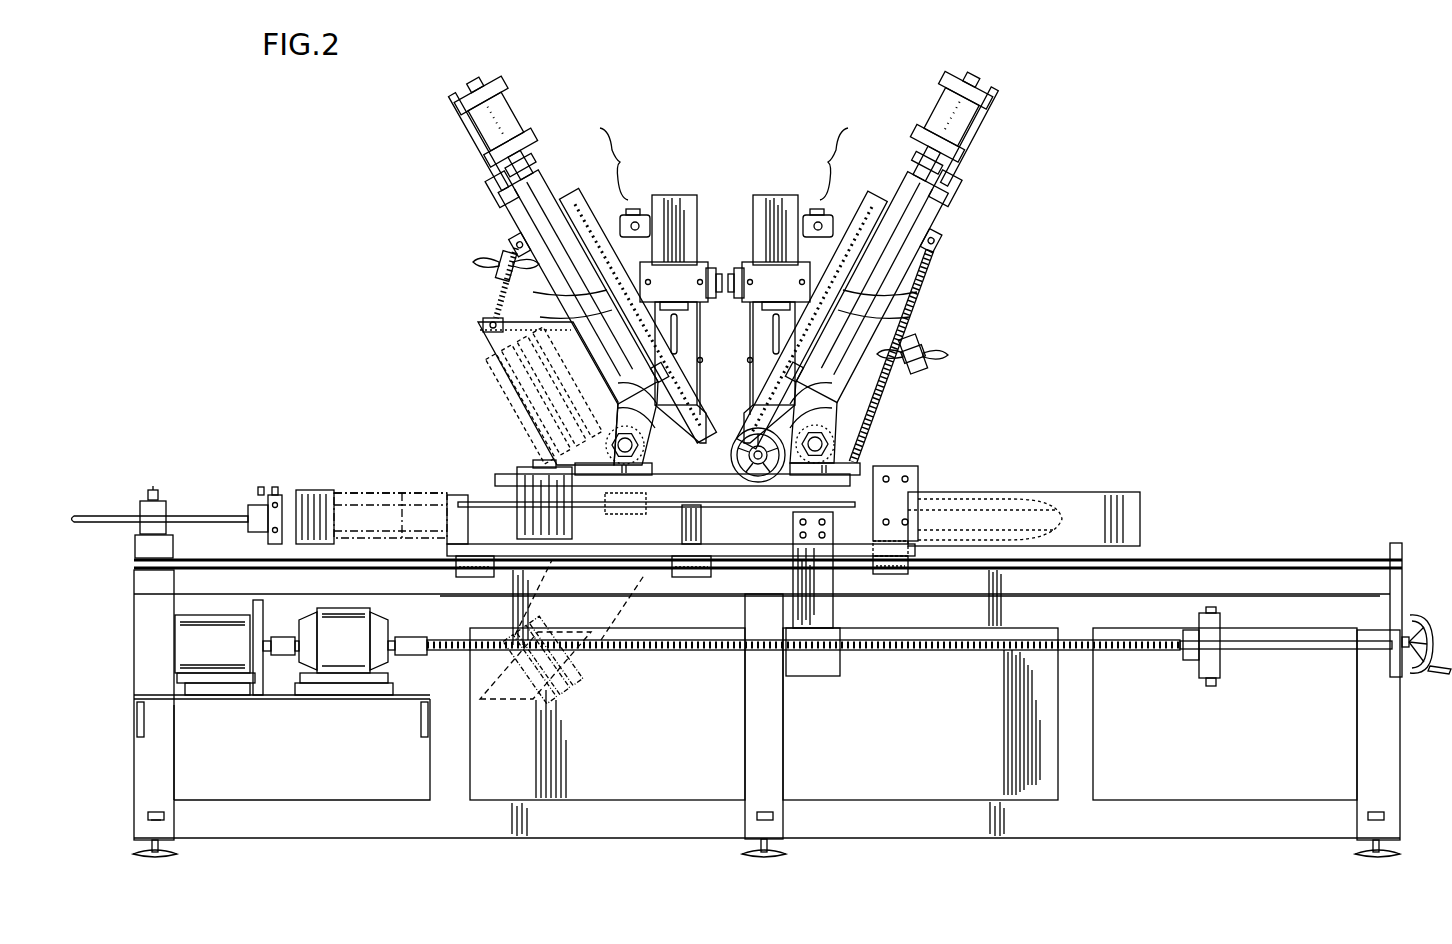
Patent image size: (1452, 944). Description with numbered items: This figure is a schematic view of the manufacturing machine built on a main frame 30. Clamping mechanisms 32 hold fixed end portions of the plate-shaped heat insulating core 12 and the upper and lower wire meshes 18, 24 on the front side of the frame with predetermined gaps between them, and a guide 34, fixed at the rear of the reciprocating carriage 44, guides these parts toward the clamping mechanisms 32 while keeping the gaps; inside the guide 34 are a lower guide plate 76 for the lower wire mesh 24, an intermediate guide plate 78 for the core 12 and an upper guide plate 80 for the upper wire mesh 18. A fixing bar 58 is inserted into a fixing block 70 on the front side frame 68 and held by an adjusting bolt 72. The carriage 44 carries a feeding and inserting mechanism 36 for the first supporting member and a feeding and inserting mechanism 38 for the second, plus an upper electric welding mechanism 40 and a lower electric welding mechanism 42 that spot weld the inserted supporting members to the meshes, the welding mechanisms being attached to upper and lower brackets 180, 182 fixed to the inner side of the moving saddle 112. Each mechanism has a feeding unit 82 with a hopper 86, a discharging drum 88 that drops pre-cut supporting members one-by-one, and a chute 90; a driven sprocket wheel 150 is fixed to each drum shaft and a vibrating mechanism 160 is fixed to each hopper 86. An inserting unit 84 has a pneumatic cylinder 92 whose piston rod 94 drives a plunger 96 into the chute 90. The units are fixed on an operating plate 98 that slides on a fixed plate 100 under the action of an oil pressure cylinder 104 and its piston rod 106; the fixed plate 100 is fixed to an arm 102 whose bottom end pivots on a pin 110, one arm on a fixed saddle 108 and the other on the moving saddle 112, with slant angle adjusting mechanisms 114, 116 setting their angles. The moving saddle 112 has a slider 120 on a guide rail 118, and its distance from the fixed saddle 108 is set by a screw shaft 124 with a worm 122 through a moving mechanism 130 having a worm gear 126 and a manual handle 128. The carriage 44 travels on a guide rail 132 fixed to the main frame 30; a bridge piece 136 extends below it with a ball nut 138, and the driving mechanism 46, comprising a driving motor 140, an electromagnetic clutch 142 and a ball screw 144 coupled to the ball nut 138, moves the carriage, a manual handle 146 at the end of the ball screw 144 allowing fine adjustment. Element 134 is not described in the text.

The plate-shaped heat insulating core 12 is at (372, 504).
The upper wire mesh 18 is at (340, 492).
The lower wire mesh 24 is at (403, 530).
The main frame 30 is at (672, 840).
The clamping mechanism 32 is at (282, 494).
The guide 34 is at (1112, 490).
The feeding and inserting mechanism of the first supporting member 36 is at (960, 272).
The feeding and inserting mechanism of the second supporting member 38 is at (402, 272).
The upper electric welding mechanism 40 is at (480, 352).
The lower electric welding mechanism 42 is at (519, 700).
The reciprocating carriage 44 is at (762, 570).
The driving mechanism 46 is at (288, 710).
The fixing bar 58 is at (207, 515).
The front side frame 68 is at (134, 545).
The fixing block 70 is at (142, 506).
The adjusting bolt 72 is at (153, 486).
The lower guide plate 76 is at (1040, 550).
The intermediate guide plate 78 is at (1060, 512).
The upper guide plate 80 is at (1000, 500).
The feeding unit 82 is at (672, 194).
The inserting unit 84 is at (725, 164).
The hopper 86 is at (753, 212).
The discharging drum 88 is at (700, 305).
The chute 90 is at (750, 372).
The pneumatic cylinder 92 is at (905, 155).
The piston rod 94 is at (912, 182).
The plunger 96 is at (874, 212).
The operating plate 98 is at (918, 292).
The fixed plate 100 is at (912, 317).
The arm 102 is at (928, 240).
The oil pressure cylinder 104 is at (976, 132).
The piston rod 106 is at (962, 192).
The fixed saddle 108 is at (862, 452).
The pin 110 is at (829, 443).
The moving saddle 112 is at (532, 462).
The slant angle adjusting mechanism 114 is at (940, 353).
The slant angle adjusting mechanism 116 is at (470, 262).
The guide rail 118 is at (490, 494).
The slider 120 is at (623, 514).
The worm 122 is at (752, 508).
The screw shaft 124 is at (716, 508).
The worm gear 126 is at (832, 384).
The manual handle 128 is at (832, 408).
The moving mechanism 130 is at (730, 460).
The guide rail 132 is at (425, 571).
The bearing pad 134 is at (474, 578).
The bridge piece 136 is at (910, 609).
The ball nut 138 is at (838, 678).
The driving motor 140 is at (224, 699).
The electromagnetic clutch 142 is at (345, 683).
The ball screw 144 is at (901, 651).
The manual handle 146 is at (1428, 678).
The driven sprocket wheel 150 is at (713, 268).
The vibrating mechanism 160 is at (632, 209).
The upper bracket 180 is at (508, 392).
The lower bracket 182 is at (575, 682).